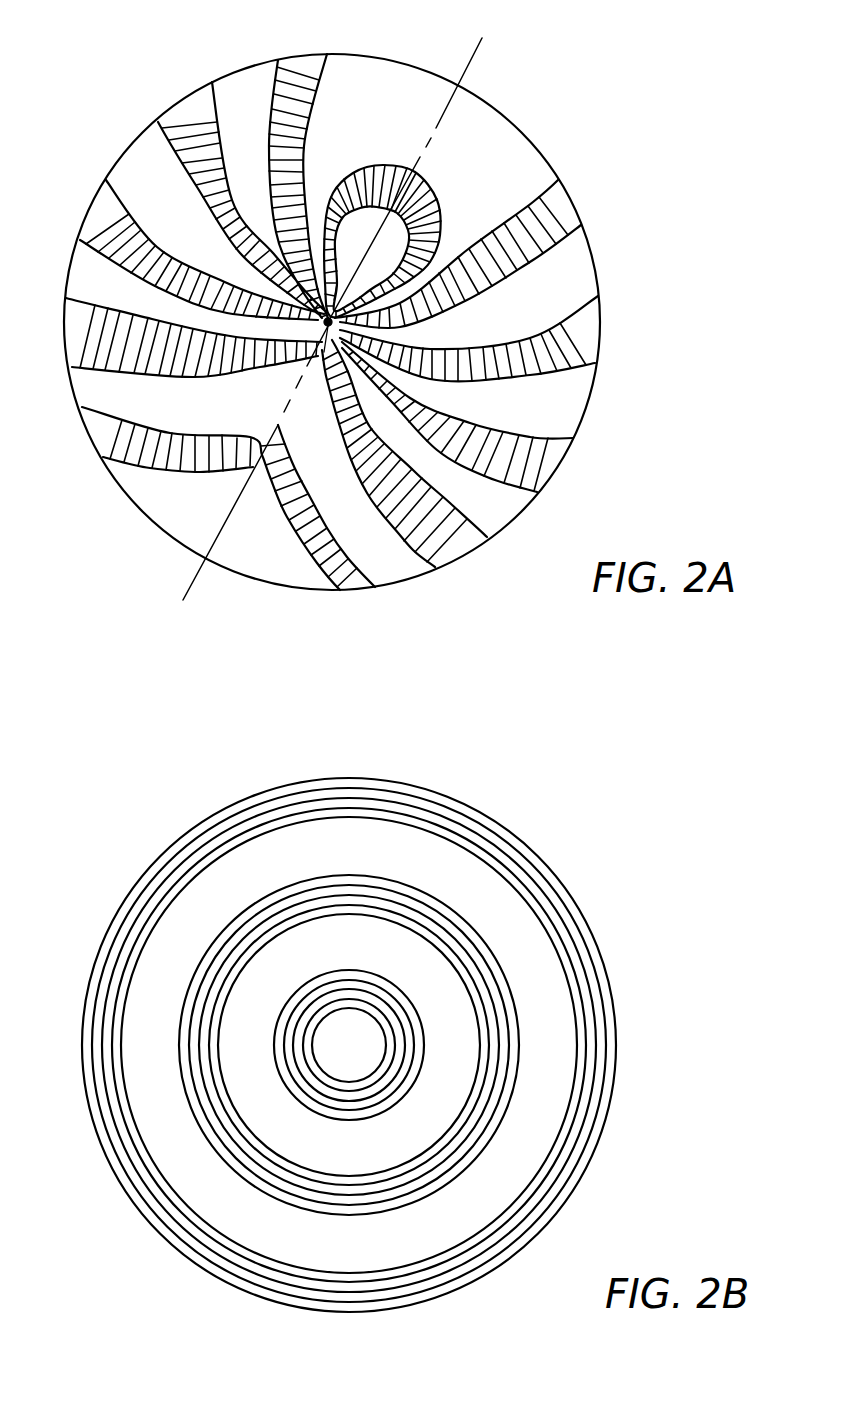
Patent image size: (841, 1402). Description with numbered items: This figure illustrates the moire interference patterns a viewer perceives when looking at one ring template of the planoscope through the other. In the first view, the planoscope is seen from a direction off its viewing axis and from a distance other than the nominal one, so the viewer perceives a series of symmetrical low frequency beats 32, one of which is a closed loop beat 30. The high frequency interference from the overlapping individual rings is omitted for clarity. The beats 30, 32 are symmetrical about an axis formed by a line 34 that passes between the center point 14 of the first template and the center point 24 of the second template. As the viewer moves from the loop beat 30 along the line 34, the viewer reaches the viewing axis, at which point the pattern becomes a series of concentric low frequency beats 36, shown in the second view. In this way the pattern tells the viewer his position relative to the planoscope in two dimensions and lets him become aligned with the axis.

In FIG. 2A, the center point 14 is at (325, 356).
In FIG. 2A, the center point 24 is at (341, 298).
In FIG. 2A, the loop beat 30 is at (383, 164).
In FIG. 2A, the low frequency beats 32 is at (560, 203).
In FIG. 2A, the line 34 is at (474, 52).
In FIG. 2B, the concentric low frequency beats 36 is at (340, 973).